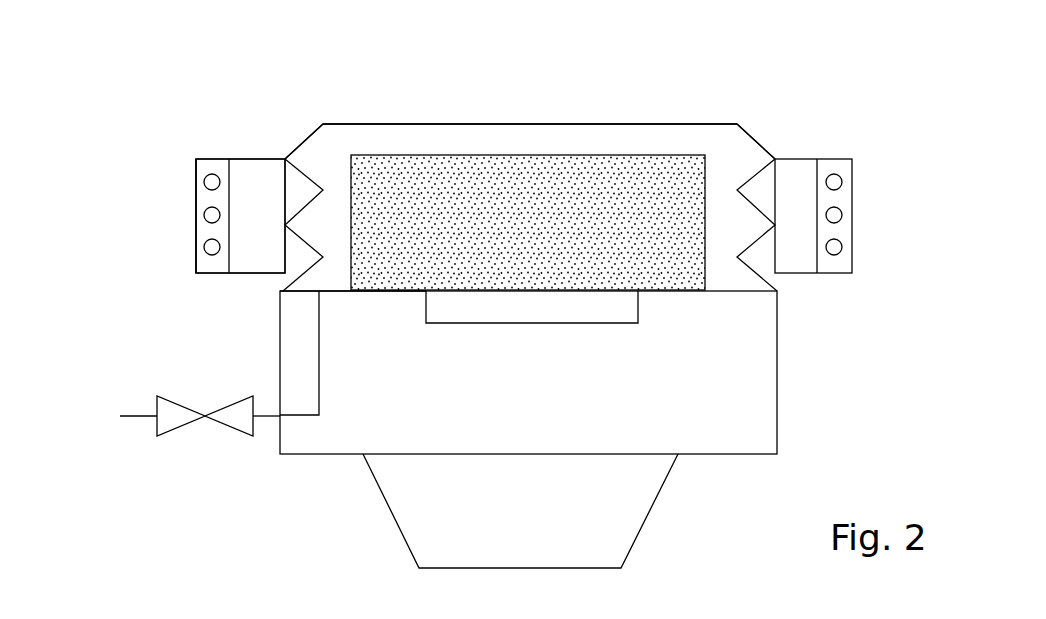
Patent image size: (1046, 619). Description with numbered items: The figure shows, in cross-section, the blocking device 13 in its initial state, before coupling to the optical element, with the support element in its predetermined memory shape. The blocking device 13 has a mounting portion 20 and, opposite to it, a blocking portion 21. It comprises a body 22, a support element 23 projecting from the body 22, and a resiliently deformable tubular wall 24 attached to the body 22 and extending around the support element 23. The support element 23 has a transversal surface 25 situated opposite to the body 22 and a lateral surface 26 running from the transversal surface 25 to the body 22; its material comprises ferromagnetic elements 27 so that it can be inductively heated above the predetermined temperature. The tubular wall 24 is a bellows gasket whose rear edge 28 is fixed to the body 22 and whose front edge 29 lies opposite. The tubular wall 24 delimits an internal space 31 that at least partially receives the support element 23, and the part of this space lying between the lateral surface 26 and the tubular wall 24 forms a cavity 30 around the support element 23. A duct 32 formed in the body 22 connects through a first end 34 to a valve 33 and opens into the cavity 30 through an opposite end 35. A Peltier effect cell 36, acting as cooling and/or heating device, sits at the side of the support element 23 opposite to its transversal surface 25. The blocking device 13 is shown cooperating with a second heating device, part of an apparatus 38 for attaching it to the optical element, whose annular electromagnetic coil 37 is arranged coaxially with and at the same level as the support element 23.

The blocking device 13 is at (140, 200).
The mounting portion 20 is at (693, 522).
The blocking portion 21 is at (860, 278).
The body 22 is at (777, 415).
The support element 23 is at (710, 180).
The tubular wall 24 is at (760, 245).
The transversal surface 25 is at (528, 150).
The lateral surface 26 is at (343, 222).
The ferromagnetic elements 27 is at (462, 190).
The rear edge 28 is at (282, 284).
The front edge 29 is at (370, 123).
The cavity 30 is at (310, 222).
The internal space 31 is at (683, 125).
The duct 32 is at (319, 347).
The valve 33 is at (177, 432).
The first end 34 is at (275, 418).
The opposite end 35 is at (320, 293).
The Peltier effect cell 36 is at (638, 310).
The electromagnetic coil 37 is at (196, 235).
The apparatus 38 is at (162, 177).